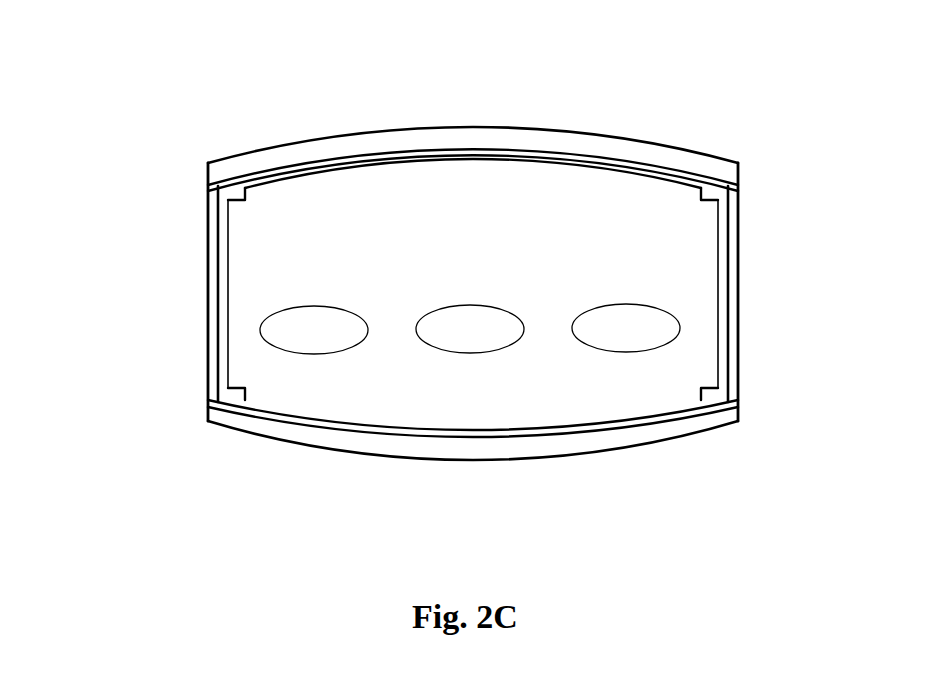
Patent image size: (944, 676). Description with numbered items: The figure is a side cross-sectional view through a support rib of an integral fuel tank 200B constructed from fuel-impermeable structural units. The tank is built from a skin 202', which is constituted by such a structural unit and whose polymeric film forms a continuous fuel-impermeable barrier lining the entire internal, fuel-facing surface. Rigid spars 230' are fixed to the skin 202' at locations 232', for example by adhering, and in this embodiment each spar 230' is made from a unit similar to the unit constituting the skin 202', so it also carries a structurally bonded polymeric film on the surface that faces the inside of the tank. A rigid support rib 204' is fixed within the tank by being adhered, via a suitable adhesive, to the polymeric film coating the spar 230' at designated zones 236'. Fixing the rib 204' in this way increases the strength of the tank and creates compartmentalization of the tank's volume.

The integral fuel tank 200B is at (113, 110).
The skin 202' is at (473, 298).
The rib 204' is at (473, 213).
The spar 230' is at (475, 292).
The locations 232' is at (477, 291).
The designated zones 236' is at (473, 297).